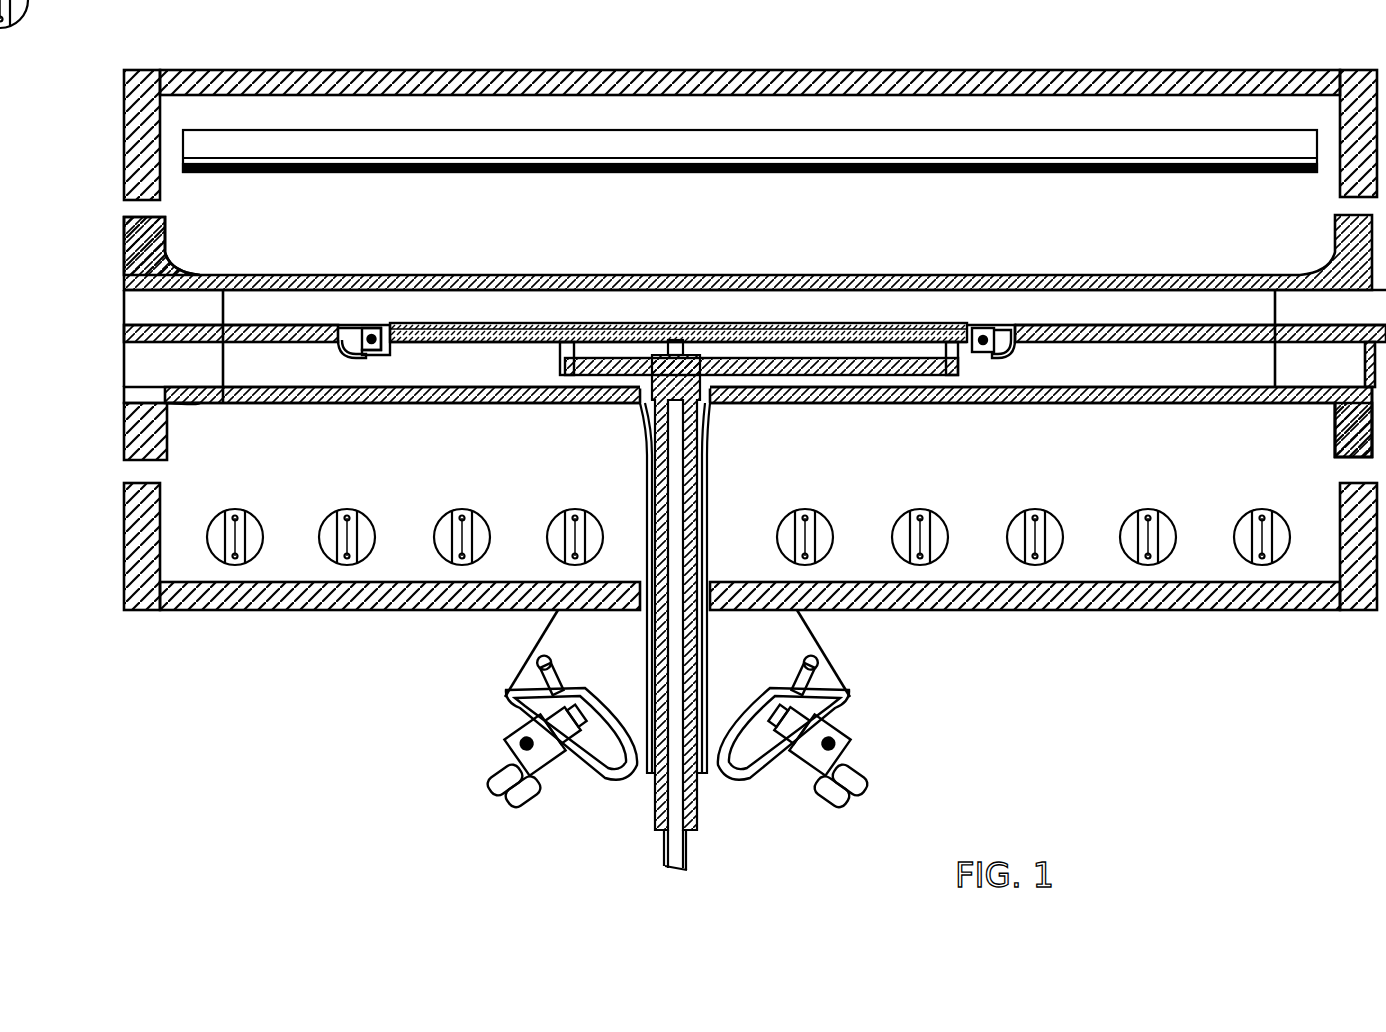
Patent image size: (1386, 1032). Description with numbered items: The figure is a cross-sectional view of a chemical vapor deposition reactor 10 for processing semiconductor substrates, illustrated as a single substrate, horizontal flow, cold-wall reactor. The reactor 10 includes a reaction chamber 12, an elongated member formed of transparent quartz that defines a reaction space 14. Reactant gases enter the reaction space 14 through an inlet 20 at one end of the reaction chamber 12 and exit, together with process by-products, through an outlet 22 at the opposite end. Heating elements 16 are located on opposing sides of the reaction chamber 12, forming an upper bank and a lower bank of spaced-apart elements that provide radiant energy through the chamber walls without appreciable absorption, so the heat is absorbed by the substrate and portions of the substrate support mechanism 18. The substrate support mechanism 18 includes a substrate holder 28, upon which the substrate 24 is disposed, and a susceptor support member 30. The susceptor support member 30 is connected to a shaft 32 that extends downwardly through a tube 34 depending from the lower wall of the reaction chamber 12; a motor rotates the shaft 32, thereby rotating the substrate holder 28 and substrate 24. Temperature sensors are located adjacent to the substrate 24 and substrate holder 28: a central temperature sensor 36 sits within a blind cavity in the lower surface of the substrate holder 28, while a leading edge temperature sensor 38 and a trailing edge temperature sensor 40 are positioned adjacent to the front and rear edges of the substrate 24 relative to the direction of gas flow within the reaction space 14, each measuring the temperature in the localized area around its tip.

The CVD reactor 10 is at (693, 435).
The reaction chamber 12 is at (260, 272).
The reaction space 14 is at (386, 312).
The heating elements 16 is at (845, 146).
The substrate support mechanism 18 is at (516, 364).
The inlet 20 is at (130, 305).
The outlet 22 is at (1375, 302).
The substrate 24 is at (486, 324).
The substrate holder 28 is at (413, 344).
The susceptor support member 30 is at (958, 368).
The shaft 32 is at (697, 445).
The tube 34 is at (707, 500).
The central temperature sensor 36 is at (688, 347).
The leading edge temperature sensor 38 is at (365, 328).
The trailing edge temperature sensor 40 is at (995, 329).